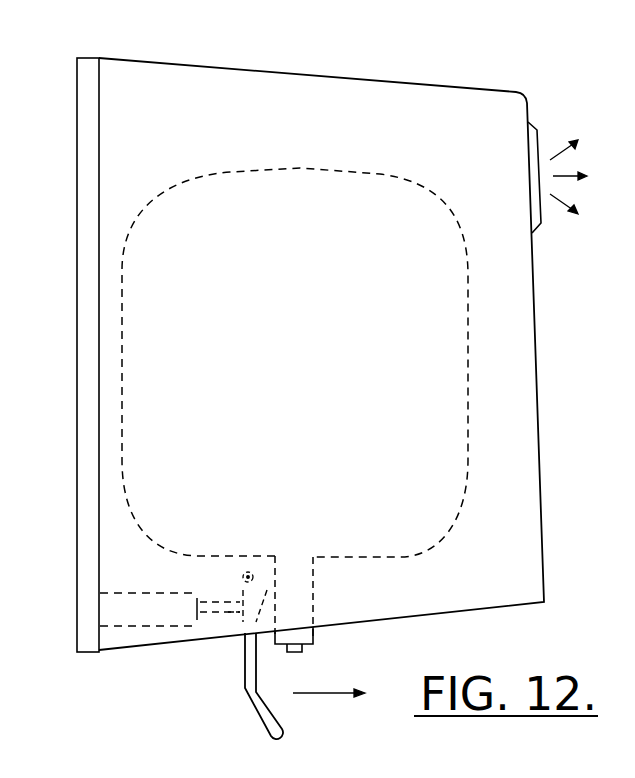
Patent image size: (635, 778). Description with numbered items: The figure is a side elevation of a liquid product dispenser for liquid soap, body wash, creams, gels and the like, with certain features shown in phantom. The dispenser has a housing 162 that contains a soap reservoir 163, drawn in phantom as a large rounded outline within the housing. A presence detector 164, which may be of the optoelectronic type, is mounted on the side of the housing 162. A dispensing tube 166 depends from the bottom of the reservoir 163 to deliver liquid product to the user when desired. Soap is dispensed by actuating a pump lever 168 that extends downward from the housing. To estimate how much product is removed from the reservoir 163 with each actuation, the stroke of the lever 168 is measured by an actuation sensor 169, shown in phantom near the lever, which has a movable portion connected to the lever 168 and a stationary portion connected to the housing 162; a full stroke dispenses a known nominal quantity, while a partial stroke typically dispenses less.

The housing 162 is at (255, 70).
The soap reservoir 163 is at (470, 310).
The presence detector 164 is at (541, 138).
The dispensing tube 166 is at (318, 617).
The pump lever 168 is at (243, 683).
The actuation sensor 169 is at (140, 594).